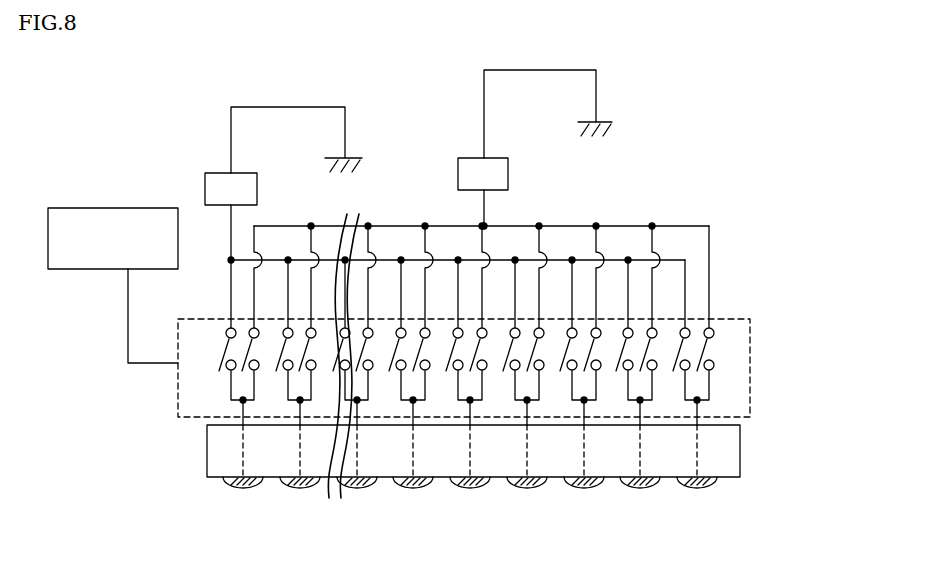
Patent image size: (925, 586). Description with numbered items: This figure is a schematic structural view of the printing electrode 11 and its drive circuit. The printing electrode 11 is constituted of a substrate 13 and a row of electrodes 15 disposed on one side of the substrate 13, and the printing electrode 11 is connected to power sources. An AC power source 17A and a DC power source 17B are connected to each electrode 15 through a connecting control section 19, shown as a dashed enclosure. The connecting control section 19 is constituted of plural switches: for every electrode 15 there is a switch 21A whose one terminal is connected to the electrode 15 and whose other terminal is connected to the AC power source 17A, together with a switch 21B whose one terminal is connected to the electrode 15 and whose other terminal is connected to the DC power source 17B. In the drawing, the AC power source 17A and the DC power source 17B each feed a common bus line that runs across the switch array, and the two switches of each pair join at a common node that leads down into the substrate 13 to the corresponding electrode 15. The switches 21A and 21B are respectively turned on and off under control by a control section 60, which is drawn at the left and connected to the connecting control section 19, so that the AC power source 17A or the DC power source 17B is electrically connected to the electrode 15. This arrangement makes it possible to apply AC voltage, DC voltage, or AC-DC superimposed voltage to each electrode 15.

The control section 60 is at (107, 208).
The AC power source 17A is at (245, 173).
The DC power source 17B is at (508, 168).
The switch 21A is at (217, 366).
The switch 21B is at (247, 343).
The connecting control section 19 is at (750, 355).
The printing electrode 11 is at (478, 476).
The substrate 13 is at (213, 455).
The electrode 15 is at (583, 490).